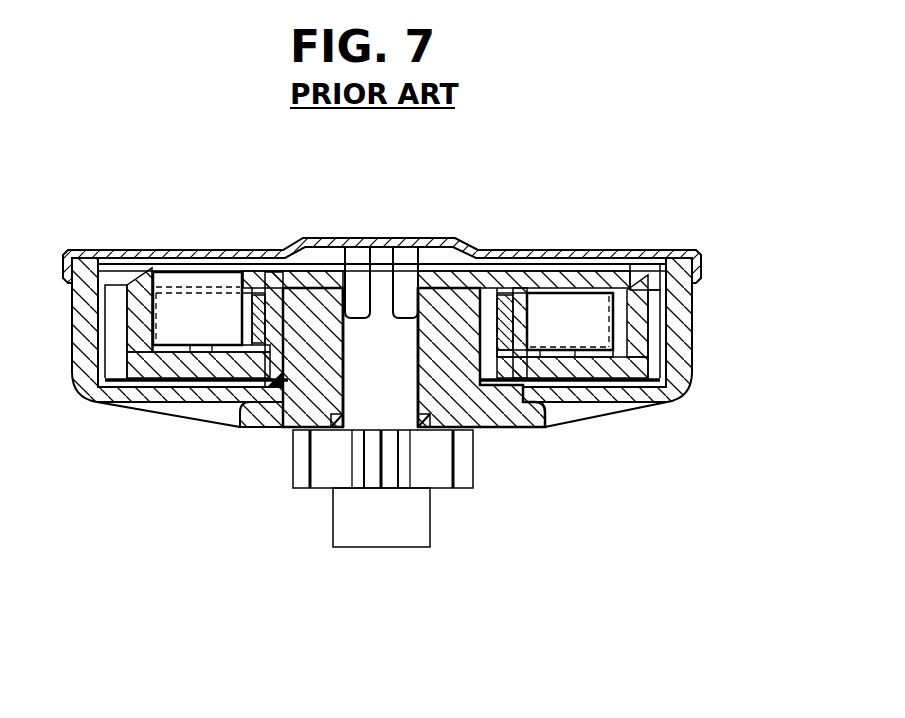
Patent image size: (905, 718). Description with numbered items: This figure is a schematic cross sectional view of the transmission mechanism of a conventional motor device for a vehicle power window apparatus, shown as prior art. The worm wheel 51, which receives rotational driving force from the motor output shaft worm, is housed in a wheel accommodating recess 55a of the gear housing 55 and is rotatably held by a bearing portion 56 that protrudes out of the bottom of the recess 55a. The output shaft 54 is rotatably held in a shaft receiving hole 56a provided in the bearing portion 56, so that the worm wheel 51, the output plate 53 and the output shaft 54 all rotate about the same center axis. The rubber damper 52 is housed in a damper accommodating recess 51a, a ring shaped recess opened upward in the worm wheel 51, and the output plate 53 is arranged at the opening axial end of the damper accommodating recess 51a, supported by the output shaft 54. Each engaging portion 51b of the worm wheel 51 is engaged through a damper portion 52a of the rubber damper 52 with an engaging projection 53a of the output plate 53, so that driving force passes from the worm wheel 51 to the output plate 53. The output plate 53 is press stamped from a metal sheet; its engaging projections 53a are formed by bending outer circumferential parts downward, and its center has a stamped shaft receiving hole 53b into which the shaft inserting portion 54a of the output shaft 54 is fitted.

The worm wheel 51 is at (653, 280).
The damper accommodating recess 51a is at (178, 345).
The engaging portions 51b is at (523, 318).
The rubber damper 52 is at (263, 298).
The damper portions 52a is at (252, 328).
The output plate 53 is at (588, 282).
The engaging projections 53a is at (228, 307).
The shaft receiving hole 53b is at (356, 292).
The output shaft 54 is at (428, 517).
The shaft inserting portion 54a is at (393, 293).
The gear housing 55 is at (80, 393).
The wheel accommodating recess 55a is at (662, 345).
The bearing portion 56 is at (465, 305).
The shaft receiving hole 56a is at (345, 362).